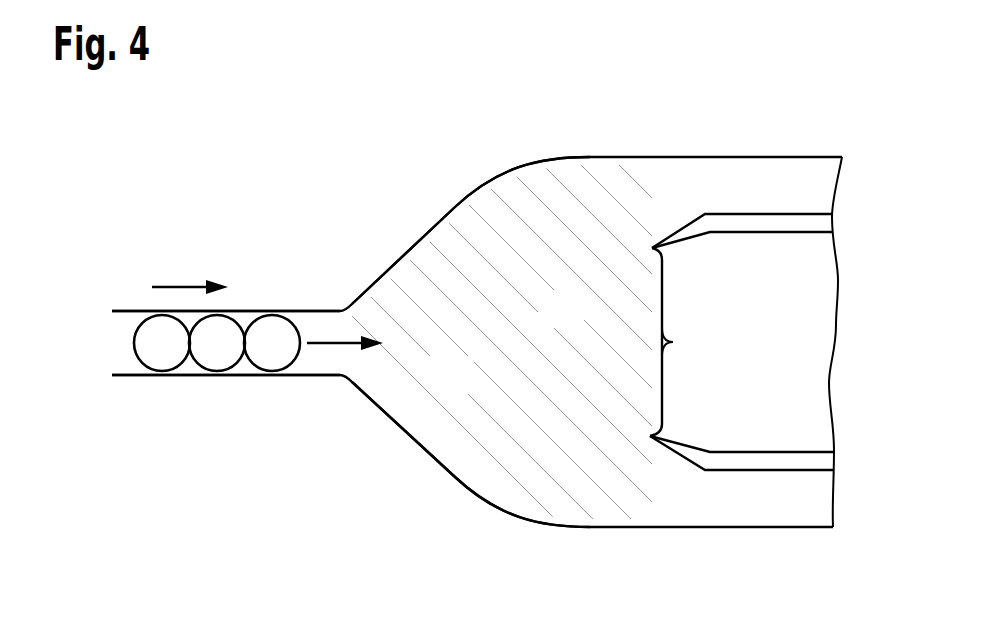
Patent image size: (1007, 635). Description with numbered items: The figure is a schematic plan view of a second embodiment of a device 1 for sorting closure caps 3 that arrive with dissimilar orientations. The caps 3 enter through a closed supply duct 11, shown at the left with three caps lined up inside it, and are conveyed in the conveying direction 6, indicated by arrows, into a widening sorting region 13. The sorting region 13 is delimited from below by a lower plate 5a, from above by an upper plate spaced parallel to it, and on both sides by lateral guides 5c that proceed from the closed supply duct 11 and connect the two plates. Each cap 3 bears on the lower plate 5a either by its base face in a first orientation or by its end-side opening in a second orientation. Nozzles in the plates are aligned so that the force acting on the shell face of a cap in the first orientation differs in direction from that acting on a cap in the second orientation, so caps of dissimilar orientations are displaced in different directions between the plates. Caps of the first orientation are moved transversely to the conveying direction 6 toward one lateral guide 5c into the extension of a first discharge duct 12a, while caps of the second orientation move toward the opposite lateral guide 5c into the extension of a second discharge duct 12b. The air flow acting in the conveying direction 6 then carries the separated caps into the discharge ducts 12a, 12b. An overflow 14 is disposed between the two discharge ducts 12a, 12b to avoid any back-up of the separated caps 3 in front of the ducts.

The device 1 is at (257, 155).
The closure caps 3 is at (155, 350).
The lower plate 5a is at (468, 389).
The lateral guides 5c is at (455, 208).
The conveying direction 6 is at (178, 285).
The closed supply duct 11 is at (238, 376).
The first discharge duct 12a is at (758, 190).
The second discharge duct 12b is at (758, 493).
The sorting region 13 is at (579, 324).
The overflow 14 is at (681, 342).